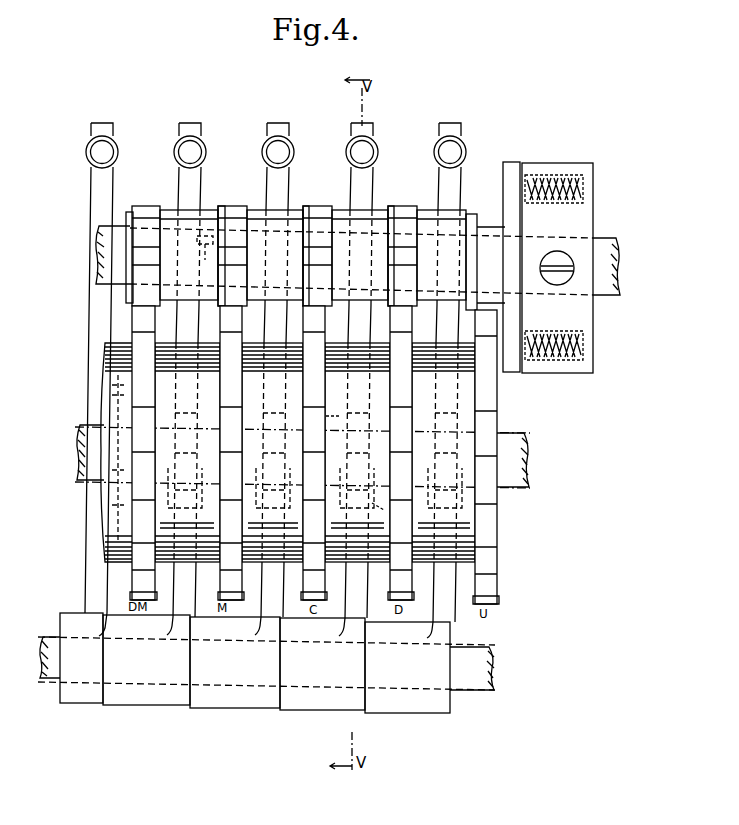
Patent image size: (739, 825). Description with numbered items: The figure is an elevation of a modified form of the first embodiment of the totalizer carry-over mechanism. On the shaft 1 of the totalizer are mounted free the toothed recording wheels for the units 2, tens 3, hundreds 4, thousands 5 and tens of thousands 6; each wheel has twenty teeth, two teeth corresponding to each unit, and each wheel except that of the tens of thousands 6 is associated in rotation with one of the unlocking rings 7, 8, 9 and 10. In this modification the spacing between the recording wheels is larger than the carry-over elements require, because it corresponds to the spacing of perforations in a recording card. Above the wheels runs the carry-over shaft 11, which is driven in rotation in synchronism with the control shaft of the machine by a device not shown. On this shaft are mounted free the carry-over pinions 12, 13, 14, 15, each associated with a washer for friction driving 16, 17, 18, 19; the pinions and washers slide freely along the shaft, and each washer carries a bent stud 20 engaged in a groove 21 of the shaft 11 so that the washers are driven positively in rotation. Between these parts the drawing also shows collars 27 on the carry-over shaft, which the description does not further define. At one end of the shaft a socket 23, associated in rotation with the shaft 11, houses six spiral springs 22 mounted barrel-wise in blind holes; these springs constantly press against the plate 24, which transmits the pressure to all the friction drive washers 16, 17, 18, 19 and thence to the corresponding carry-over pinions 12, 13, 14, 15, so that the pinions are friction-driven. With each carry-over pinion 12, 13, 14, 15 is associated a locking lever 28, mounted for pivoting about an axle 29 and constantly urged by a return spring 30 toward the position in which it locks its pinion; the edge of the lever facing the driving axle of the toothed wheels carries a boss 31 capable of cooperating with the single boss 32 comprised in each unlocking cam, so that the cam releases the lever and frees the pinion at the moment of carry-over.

The shaft of the totalizer 1 is at (520, 446).
The toothed wheel for the units 2 is at (486, 457).
The toothed wheel for the tens 3 is at (401, 453).
The toothed wheel for the hundreds 4 is at (314, 453).
The toothed wheel for the thousands 5 is at (231, 453).
The toothed wheel for the tens of thousands 6 is at (143, 453).
The unlocking ring 7 is at (443, 452).
The unlocking ring 8 is at (357, 452).
The unlocking ring 9 is at (272, 452).
The unlocking ring 10 is at (187, 452).
The carry-over shaft 11 is at (606, 246).
The carry-over pinion 12 is at (441, 255).
The carry-over pinion 13 is at (360, 255).
The carry-over pinion 14 is at (275, 255).
The carry-over pinion 15 is at (189, 255).
The washer for friction driving 16 is at (472, 216).
The washer for friction driving 17 is at (390, 214).
The washer for friction driving 18 is at (305, 214).
The washer for friction driving 19 is at (226, 218).
The bent stud 20 is at (206, 236).
The groove 21 is at (104, 245).
The spiral spring 22 is at (554, 178).
The socket 23 is at (557, 268).
The plate 24 is at (512, 166).
The collar 27 is at (148, 212).
The locking lever 28 is at (350, 179).
The axle 29 is at (492, 679).
The return spring 30 is at (348, 152).
The boss 31 is at (327, 418).
The single boss 32 is at (384, 510).